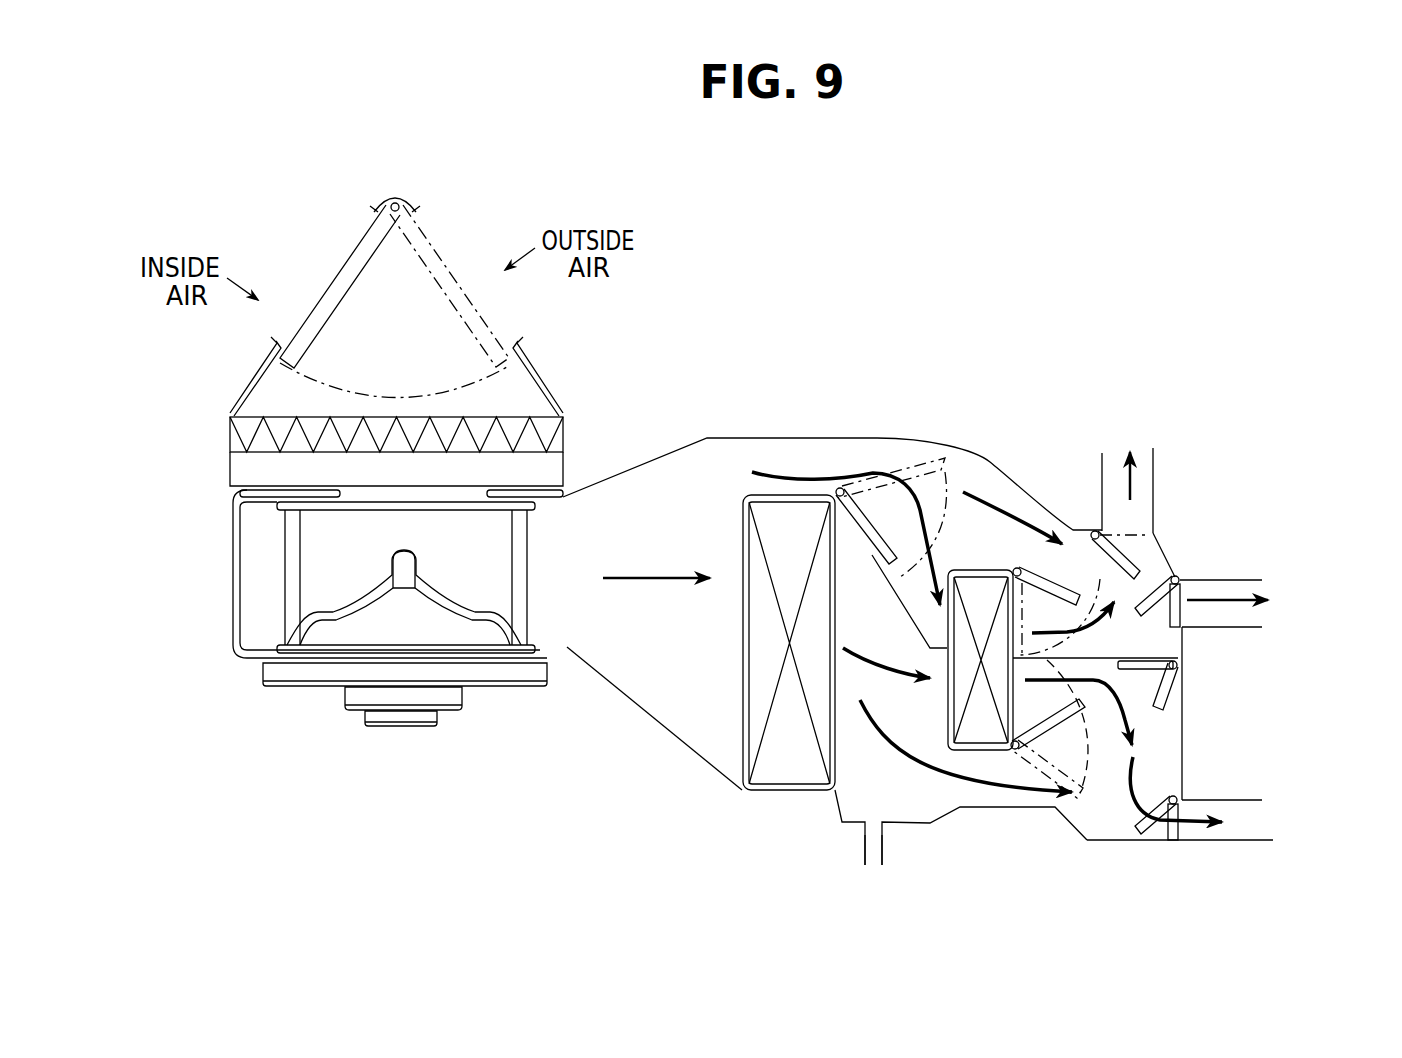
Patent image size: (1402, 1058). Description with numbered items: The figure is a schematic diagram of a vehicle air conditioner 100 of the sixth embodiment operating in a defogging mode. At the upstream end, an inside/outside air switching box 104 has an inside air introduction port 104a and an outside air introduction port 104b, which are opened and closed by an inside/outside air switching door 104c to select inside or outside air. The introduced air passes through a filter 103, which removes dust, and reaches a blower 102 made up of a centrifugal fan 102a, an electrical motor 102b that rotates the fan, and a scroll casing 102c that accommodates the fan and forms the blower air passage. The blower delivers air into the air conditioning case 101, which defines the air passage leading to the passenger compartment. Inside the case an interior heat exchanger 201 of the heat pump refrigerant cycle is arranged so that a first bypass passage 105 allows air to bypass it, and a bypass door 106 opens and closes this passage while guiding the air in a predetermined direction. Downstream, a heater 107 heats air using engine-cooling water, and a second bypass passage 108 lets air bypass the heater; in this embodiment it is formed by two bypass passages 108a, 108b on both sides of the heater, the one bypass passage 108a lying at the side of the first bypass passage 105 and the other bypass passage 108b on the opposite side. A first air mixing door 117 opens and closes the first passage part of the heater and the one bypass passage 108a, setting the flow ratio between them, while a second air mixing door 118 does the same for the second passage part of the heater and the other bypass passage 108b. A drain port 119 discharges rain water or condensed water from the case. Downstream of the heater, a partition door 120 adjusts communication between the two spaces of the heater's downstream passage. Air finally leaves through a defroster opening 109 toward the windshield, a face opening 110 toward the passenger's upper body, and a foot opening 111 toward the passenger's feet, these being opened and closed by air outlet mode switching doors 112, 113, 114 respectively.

The vehicle air conditioner 100 is at (810, 355).
The air conditioning case 101 is at (673, 443).
The blower 102 is at (295, 678).
The centrifugal fan 102a is at (522, 598).
The electrical motor 102b is at (467, 707).
The scroll casing 102c is at (230, 620).
The filter 103 is at (553, 437).
The inside/outside air switching box 104 is at (540, 380).
The inside air introduction port 104a is at (295, 265).
The outside air introduction port 104b is at (442, 217).
The inside/outside air switching door 104c is at (362, 228).
The first bypass passage 105 is at (803, 455).
The bypass door 106 is at (905, 505).
The heater 107 is at (978, 772).
The second bypass passage 108 is at (1057, 567).
The bypass passage 108a is at (1005, 545).
The bypass passage 108b is at (1000, 775).
The defroster opening 109 is at (1153, 473).
The face opening 110 is at (1225, 592).
The foot opening 111 is at (1217, 827).
The air outlet mode switching door 112 is at (1148, 542).
The air outlet mode switching door 113 is at (1180, 617).
The air outlet mode switching door 114 is at (1167, 847).
The first air mixing door 117 is at (1045, 565).
The second air mixing door 118 is at (1092, 742).
The drain port 119 is at (873, 863).
The partition door 120 is at (1178, 675).
The interior heat exchanger 201 is at (772, 717).